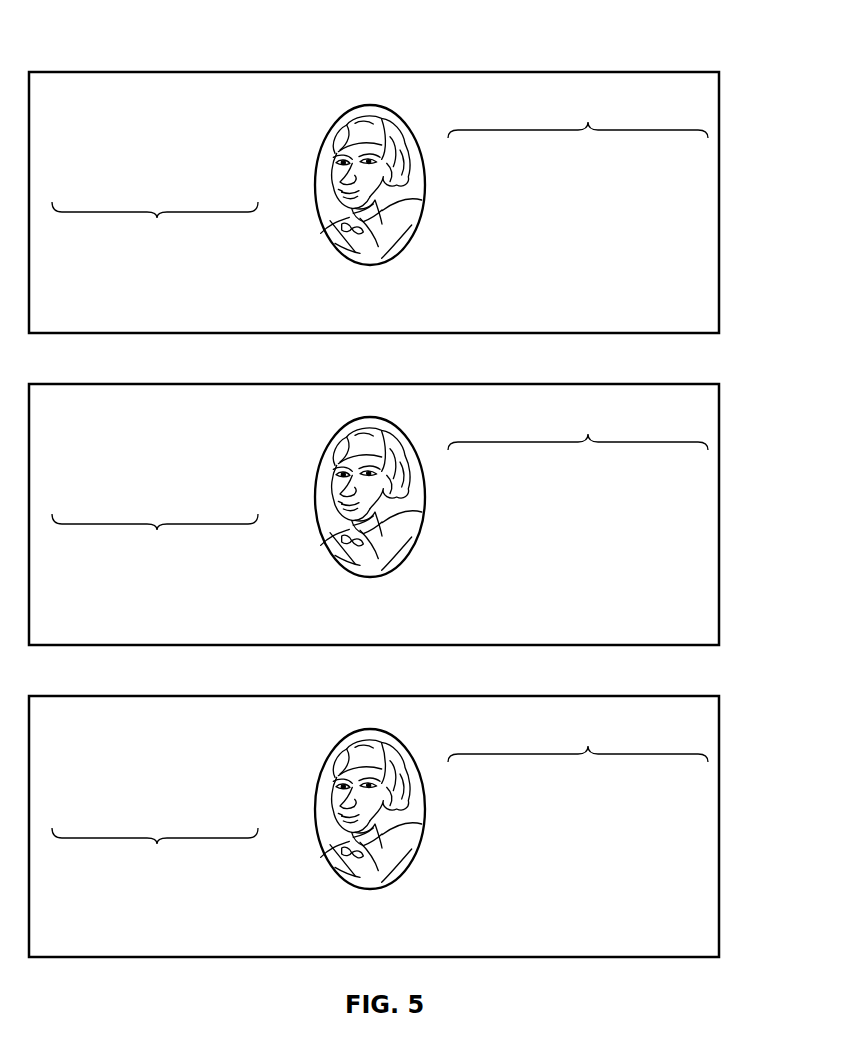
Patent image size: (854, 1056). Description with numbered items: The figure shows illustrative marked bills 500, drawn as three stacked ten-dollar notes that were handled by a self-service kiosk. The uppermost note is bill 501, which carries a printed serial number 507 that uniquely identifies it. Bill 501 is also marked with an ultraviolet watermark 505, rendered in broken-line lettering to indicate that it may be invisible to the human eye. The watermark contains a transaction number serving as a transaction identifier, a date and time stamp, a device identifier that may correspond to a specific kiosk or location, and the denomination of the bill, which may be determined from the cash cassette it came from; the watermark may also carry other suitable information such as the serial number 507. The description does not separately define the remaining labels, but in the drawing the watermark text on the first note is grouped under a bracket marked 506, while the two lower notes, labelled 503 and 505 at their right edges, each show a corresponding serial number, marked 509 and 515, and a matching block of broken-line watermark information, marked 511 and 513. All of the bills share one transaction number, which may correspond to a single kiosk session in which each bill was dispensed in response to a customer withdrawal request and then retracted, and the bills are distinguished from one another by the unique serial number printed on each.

The marked bills 500 is at (114, 44).
The bill 501 is at (719, 213).
The second bank note 503 is at (411, 514).
The ultraviolet watermark 505 is at (411, 826).
The transaction information printed on first bank note 506 is at (588, 122).
The serial number 507 is at (157, 218).
The serial number of second bank note 509 is at (155, 533).
The transaction information printed on second bank note 511 is at (580, 478).
The transaction information printed on third bank note 513 is at (580, 790).
The serial number of third bank note 515 is at (155, 848).